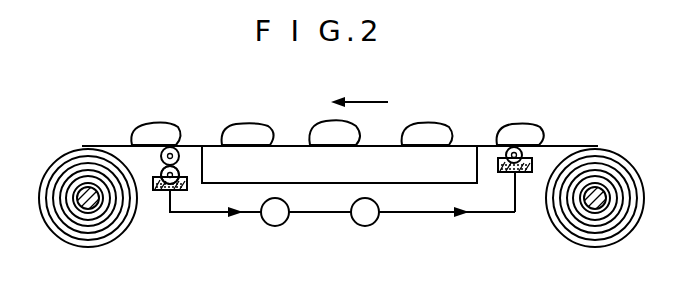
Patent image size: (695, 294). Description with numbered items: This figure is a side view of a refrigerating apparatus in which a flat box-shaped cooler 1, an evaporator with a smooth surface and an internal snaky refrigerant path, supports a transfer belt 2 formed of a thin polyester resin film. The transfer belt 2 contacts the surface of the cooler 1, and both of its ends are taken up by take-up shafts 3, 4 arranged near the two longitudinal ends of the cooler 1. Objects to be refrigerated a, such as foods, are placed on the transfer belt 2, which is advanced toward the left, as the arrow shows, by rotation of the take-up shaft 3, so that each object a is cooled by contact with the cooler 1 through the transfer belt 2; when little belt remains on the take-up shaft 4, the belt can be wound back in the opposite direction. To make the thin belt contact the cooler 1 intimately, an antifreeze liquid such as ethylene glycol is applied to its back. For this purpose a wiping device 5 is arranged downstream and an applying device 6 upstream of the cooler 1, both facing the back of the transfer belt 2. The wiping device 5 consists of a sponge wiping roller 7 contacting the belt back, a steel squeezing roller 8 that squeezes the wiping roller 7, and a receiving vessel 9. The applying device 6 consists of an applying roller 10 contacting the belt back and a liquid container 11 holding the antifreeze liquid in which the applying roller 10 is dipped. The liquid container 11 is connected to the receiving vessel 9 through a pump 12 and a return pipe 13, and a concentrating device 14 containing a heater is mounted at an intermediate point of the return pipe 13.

The cooler 1 is at (285, 145).
The transfer belt 2 is at (484, 144).
The take-up shaft 3 is at (85, 210).
The take-up shaft 4 is at (590, 215).
The wiping device 5 is at (157, 193).
The applying device 6 is at (502, 175).
The wiping roller 7 is at (176, 148).
The squeezing roller 8 is at (162, 172).
The receiving vessel 9 is at (177, 190).
The applying roller 10 is at (526, 152).
The liquid container 11 is at (528, 173).
The pump 12 is at (277, 226).
The return pipe 13 is at (433, 213).
The concentrating device 14 is at (367, 226).
The object to be refrigerated a is at (227, 125).